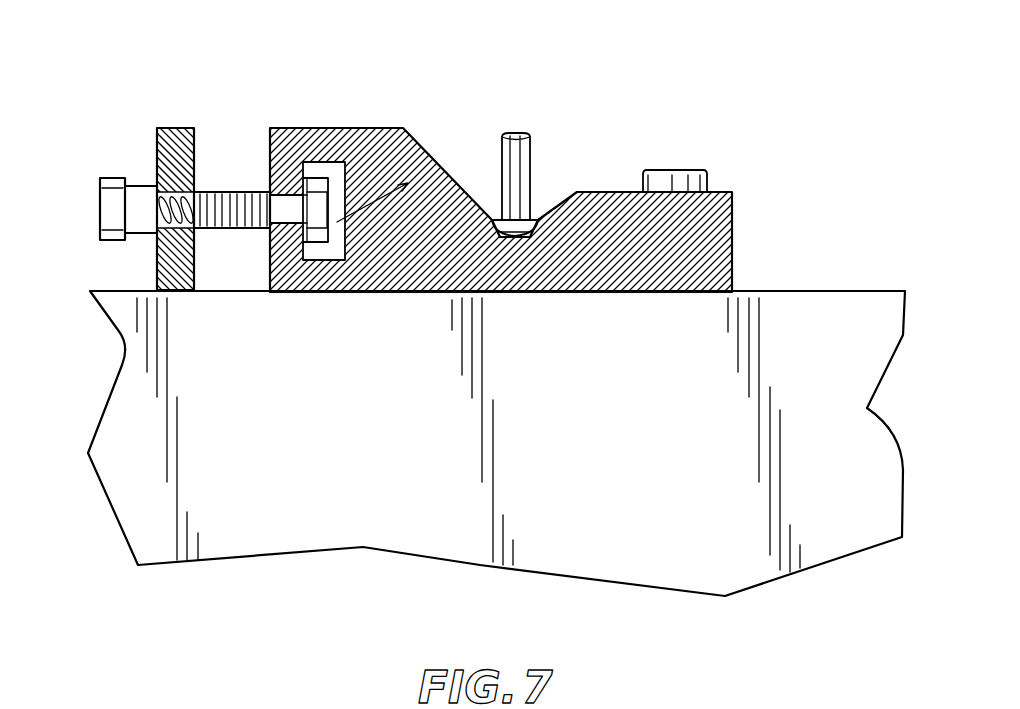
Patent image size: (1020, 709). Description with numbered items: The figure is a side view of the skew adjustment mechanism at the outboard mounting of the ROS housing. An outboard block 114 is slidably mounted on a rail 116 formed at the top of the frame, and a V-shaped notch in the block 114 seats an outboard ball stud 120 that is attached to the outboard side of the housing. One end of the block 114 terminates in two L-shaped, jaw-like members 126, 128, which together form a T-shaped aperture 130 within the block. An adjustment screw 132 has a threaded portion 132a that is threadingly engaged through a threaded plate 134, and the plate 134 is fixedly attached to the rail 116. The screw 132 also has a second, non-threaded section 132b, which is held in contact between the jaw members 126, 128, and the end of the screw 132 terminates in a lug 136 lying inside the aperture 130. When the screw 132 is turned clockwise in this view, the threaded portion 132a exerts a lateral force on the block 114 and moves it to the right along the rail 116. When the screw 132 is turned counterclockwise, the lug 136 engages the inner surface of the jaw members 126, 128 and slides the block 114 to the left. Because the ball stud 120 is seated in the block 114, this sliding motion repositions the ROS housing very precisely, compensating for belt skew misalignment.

The outboard block 114 is at (733, 226).
The rail 116 is at (840, 290).
The outboard ball stud 120 is at (517, 149).
The jaw member 126 is at (290, 207).
The jaw member 128 is at (289, 268).
The T-shaped aperture 130 is at (423, 160).
The adjustment screw 132 is at (78, 218).
The threaded portion 132a is at (228, 193).
The non-threaded section 132b is at (293, 195).
The threaded plate 134 is at (177, 128).
The lug 136 is at (316, 228).